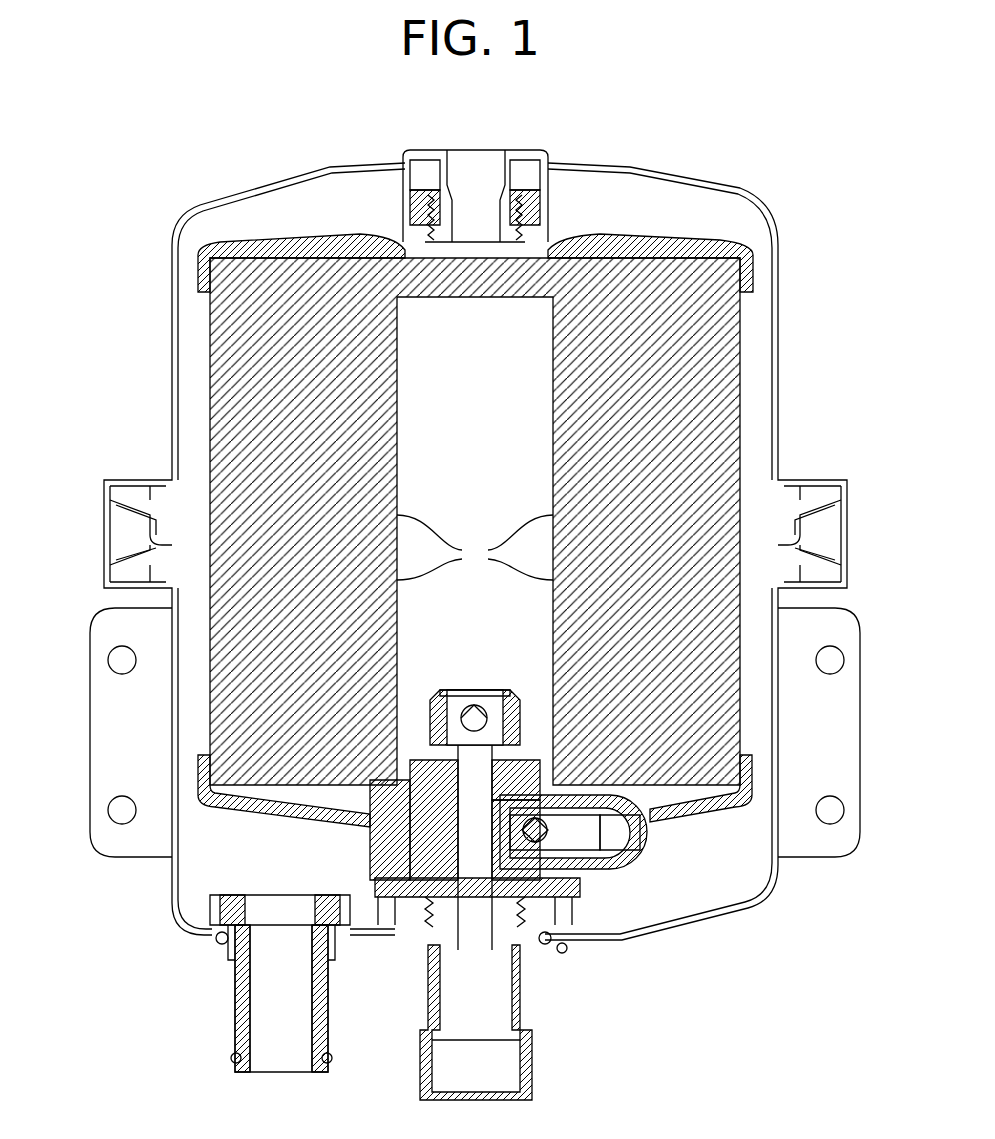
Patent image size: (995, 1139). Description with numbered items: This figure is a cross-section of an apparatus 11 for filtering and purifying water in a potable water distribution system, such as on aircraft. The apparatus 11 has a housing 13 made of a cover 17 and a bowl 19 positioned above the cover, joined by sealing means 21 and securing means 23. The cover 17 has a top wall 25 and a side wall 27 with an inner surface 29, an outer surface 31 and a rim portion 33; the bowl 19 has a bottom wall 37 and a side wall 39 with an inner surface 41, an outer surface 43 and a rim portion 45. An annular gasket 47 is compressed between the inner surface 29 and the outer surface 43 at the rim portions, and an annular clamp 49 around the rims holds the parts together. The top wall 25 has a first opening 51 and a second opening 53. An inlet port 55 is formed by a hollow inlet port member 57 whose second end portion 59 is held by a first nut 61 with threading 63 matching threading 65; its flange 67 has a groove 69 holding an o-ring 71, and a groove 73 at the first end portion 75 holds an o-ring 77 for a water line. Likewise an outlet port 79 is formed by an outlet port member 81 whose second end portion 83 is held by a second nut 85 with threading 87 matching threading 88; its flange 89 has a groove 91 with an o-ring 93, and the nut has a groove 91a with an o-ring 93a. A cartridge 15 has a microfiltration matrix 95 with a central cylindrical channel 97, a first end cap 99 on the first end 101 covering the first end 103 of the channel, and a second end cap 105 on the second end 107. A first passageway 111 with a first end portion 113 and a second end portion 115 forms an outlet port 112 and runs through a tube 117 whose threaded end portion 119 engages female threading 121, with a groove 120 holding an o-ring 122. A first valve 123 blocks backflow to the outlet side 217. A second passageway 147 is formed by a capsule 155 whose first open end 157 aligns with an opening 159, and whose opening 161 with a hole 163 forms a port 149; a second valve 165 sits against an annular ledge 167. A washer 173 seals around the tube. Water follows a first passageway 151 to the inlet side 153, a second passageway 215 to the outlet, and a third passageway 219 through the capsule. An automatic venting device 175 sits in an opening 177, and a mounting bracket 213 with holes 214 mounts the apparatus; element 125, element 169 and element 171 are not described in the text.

The apparatus 11 is at (174, 100).
The housing 13 is at (172, 368).
The cartridge 15 is at (475, 491).
The cover 17 is at (765, 903).
The bowl 19 is at (778, 224).
The sealing means 21 is at (765, 518).
The securing means 23 is at (840, 470).
The top wall 25 is at (620, 942).
The side wall 27 is at (779, 712).
The inner surface 29 is at (757, 645).
The outer surface 31 is at (779, 758).
The rim portion 33 is at (115, 536).
The bottom wall 37 is at (562, 167).
The side wall 39 is at (779, 318).
The inner surface 41 is at (779, 277).
The outer surface 43 is at (779, 352).
The rim portion 45 is at (188, 560).
The annular gasket 47 is at (178, 540).
The annular clamp 49 is at (128, 500).
The first opening 51 is at (259, 998).
The second opening 53 is at (428, 1000).
The inlet port 55 is at (248, 1030).
The inlet port member 57 is at (312, 1045).
The second end portion 59 is at (252, 905).
The first nut 61 is at (212, 912).
The threading 63 is at (215, 938).
The threading 65 is at (258, 905).
The flange 67 is at (345, 955).
The annular groove 69 is at (218, 948).
The o-ring 71 is at (235, 965).
The groove 73 is at (240, 1072).
The first end portion 75 is at (328, 1072).
The o-ring 77 is at (232, 1063).
The outlet port 79 is at (422, 1062).
The outlet port member 81 is at (422, 1085).
The second end portion 83 is at (428, 965).
The second nut 85 is at (380, 897).
The threading 87 is at (330, 912).
The threading 88 is at (486, 867).
The flange 89 is at (538, 946).
The annular groove 91 is at (565, 952).
The annular groove 91a is at (552, 940).
The o-ring 93 is at (530, 960).
The o-ring 93a is at (400, 942).
The microfiltration matrix 95 is at (385, 378).
The cylindrical channel 97 is at (485, 450).
The first end cap 99 is at (700, 795).
The first end 101 is at (236, 802).
The first end 103 is at (410, 705).
The second end cap 105 is at (340, 236).
The second end 107 is at (600, 265).
The first passageway 111 is at (516, 706).
The outlet port 112 is at (490, 952).
The first end portion 113 is at (455, 690).
The second end portion 115 is at (458, 950).
The tube 117 is at (378, 842).
The threaded end portion 119 is at (648, 937).
The groove 120 is at (518, 1030).
The female threading 121 is at (573, 832).
The o-ring 122 is at (528, 980).
The first valve 123 is at (476, 676).
The hub seal 125 is at (519, 801).
The second passageway 147 is at (640, 832).
The port 149 is at (630, 875).
The first passageway 151 is at (779, 412).
The inlet side 153 is at (758, 381).
The capsule 155 is at (638, 845).
The first open end 157 is at (592, 750).
The opening 159 is at (548, 735).
The opening 161 is at (632, 862).
The hole 163 is at (590, 870).
The second valve 165 is at (640, 750).
The annular ledge 167 is at (700, 748).
The end cap portion 169 is at (400, 780).
The end cap portion 171 is at (368, 790).
The annular rubber washer 173 is at (365, 875).
The automatic venting device 175 is at (437, 133).
The opening 177 is at (410, 178).
The mounting bracket 213 is at (135, 855).
The holes 214 is at (128, 655).
The second passageway 215 is at (527, 402).
The outlet side 217 is at (478, 554).
The third passageway 219 is at (695, 808).